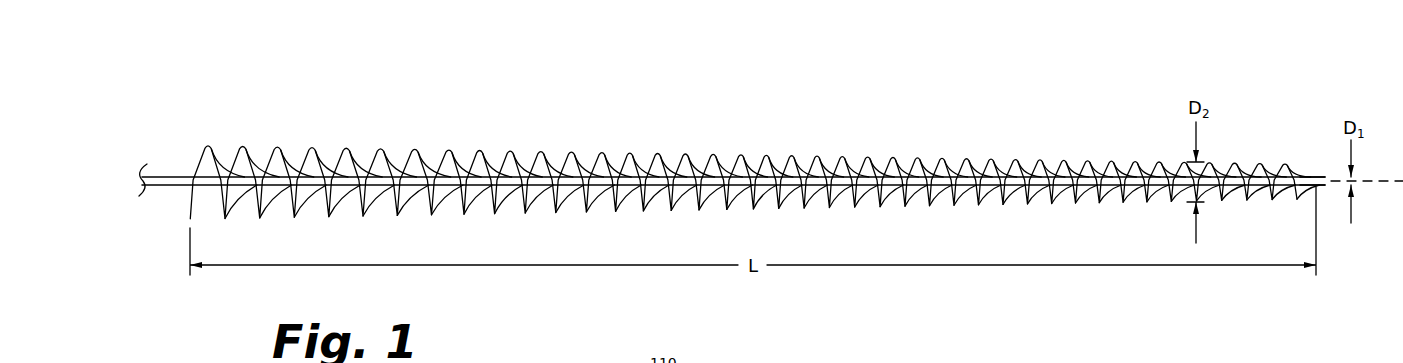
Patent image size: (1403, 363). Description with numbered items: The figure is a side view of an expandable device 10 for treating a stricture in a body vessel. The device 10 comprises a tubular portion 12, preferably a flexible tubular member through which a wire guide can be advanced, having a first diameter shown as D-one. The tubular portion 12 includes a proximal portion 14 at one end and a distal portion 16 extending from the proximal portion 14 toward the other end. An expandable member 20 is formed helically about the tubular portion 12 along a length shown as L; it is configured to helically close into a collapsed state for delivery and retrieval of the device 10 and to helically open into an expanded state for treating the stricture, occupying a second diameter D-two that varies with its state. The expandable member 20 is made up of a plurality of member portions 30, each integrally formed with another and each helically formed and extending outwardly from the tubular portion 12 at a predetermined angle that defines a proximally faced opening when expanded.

The expandable device 10 is at (243, 85).
The tubular portion 12 is at (164, 181).
The proximal portion 14 is at (164, 181).
The distal portion 16 is at (1315, 177).
The expandable member 20 is at (311, 146).
The member portion 30 is at (473, 197).